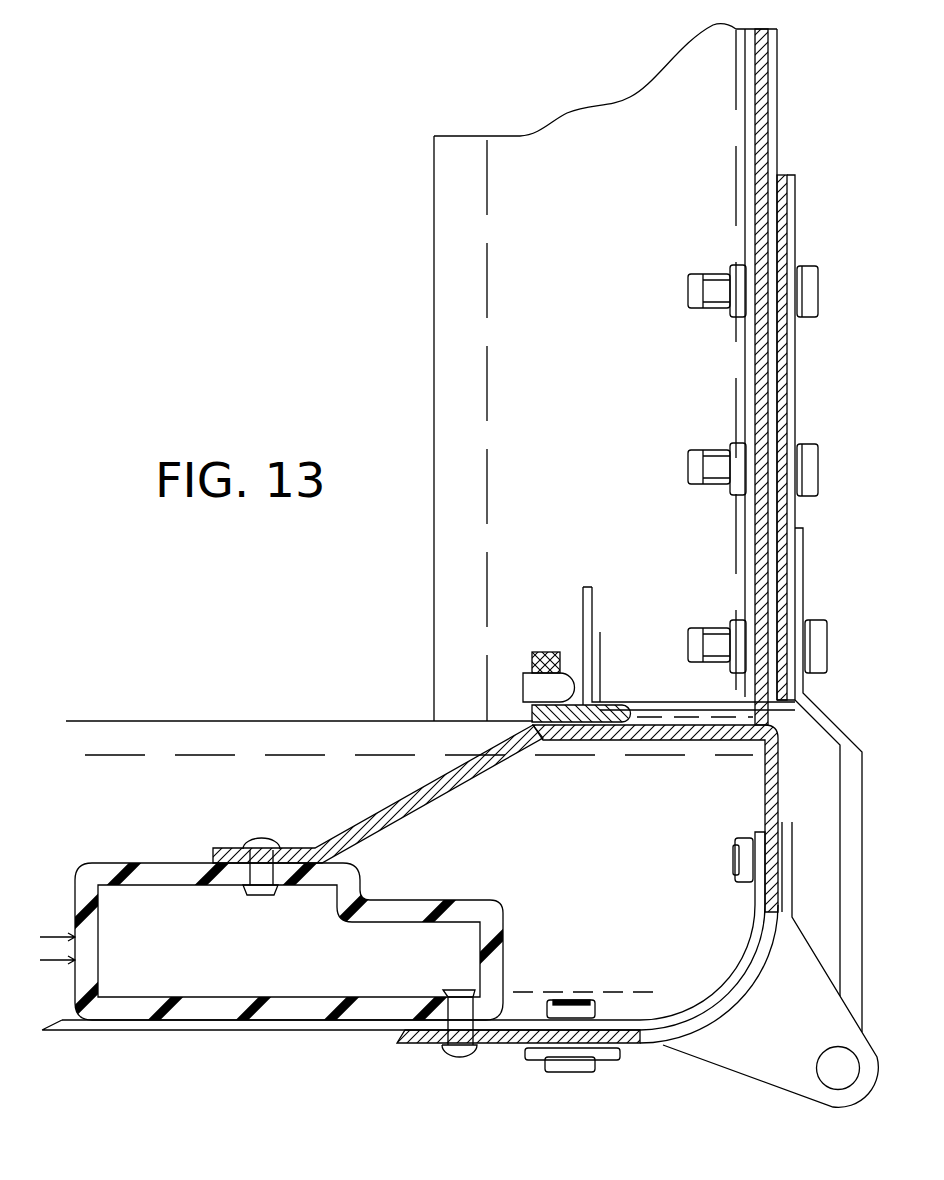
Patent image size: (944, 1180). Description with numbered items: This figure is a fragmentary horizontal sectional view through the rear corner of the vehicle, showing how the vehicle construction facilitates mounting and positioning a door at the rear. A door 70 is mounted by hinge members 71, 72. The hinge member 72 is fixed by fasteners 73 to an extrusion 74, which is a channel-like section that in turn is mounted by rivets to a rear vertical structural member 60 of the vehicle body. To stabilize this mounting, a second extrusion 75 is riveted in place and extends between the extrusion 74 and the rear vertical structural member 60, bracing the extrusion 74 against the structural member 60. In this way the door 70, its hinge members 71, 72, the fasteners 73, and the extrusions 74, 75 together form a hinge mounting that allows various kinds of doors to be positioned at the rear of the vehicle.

The rear vertical structural member 60 is at (468, 912).
The door 70 is at (783, 422).
The hinge member 71 is at (840, 770).
The hinge member 72 is at (765, 1052).
The fasteners 73 is at (757, 893).
The extrusion 74 is at (768, 767).
The extrusion 75 is at (438, 787).